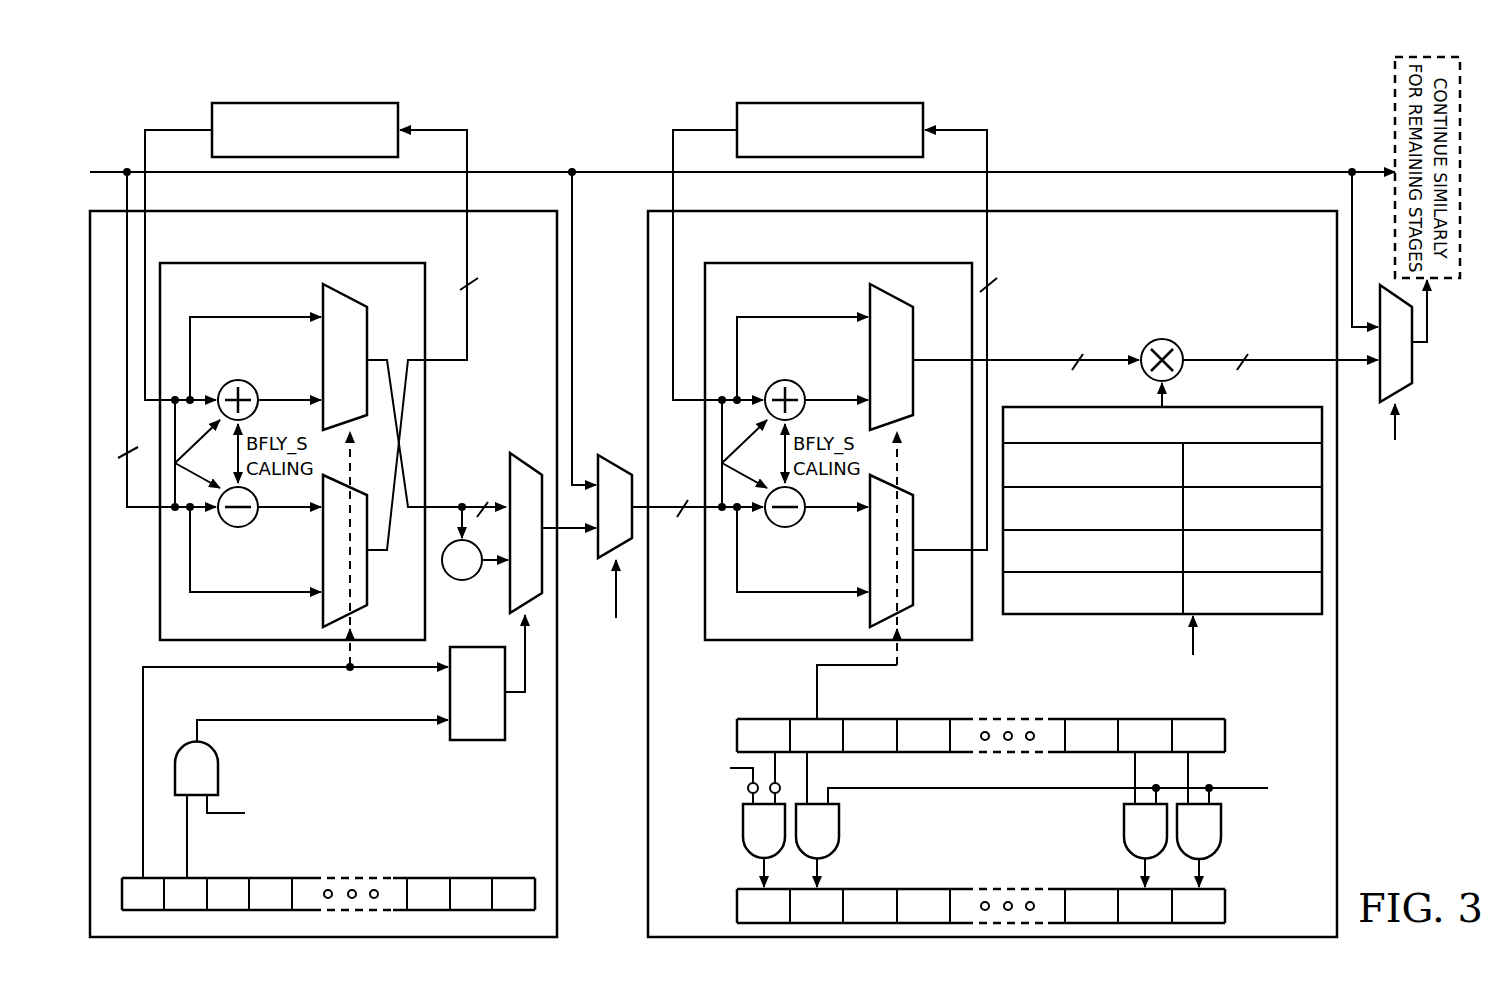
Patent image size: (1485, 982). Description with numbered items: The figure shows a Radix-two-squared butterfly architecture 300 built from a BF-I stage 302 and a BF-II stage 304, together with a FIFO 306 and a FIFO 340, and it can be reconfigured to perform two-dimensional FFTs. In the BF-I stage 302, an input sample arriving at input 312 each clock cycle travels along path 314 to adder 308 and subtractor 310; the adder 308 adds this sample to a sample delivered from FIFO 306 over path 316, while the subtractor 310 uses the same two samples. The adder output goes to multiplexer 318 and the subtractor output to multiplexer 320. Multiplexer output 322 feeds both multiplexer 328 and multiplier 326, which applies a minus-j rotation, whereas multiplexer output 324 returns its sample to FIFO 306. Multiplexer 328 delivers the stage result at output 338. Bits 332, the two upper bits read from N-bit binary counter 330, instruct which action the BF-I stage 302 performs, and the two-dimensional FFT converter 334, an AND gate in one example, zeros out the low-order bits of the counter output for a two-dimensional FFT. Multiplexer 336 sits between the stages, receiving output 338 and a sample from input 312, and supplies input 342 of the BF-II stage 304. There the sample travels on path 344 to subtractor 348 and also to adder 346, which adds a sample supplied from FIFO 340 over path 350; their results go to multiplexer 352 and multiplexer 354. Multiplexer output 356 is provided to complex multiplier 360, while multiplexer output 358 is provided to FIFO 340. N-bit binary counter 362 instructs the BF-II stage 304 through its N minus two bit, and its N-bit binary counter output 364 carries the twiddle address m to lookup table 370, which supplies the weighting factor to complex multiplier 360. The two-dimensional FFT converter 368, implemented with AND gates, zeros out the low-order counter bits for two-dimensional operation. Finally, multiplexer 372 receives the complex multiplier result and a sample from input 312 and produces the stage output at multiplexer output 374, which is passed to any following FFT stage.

The Radix-2^2 butterfly architecture 300 is at (1208, 103).
The BF-I stage 302 is at (323, 574).
The BF-II stage 304 is at (992, 574).
The FIFO 306 is at (305, 101).
The adder 308 is at (257, 383).
The subtractor 310 is at (257, 527).
The input 312 is at (105, 170).
The path 314 is at (143, 509).
The path 316 is at (147, 245).
The multiplexer 318 is at (322, 297).
The multiplexer 320 is at (322, 612).
The multiplexer output 322 is at (380, 357).
The multiplexer output 324 is at (382, 556).
The multiplier 326 is at (467, 578).
The multiplexer 328 is at (508, 475).
The N-bit binary counter 330 is at (477, 875).
The bits 332 is at (475, 745).
The 2D FFT converter 334 is at (220, 765).
The multiplexer 336 is at (606, 455).
The output 338 is at (577, 532).
The FIFO 340 is at (830, 101).
The input 342 is at (672, 518).
The path 344 is at (693, 500).
The adder 346 is at (805, 383).
The subtractor 348 is at (805, 527).
The path 350 is at (675, 245).
The multiplexer 352 is at (868, 297).
The multiplexer 354 is at (868, 612).
The multiplexer output 356 is at (930, 357).
The multiplexer output 358 is at (930, 556).
The complex multiplier 360 is at (1170, 339).
The N-bit binary counter 362 is at (766, 716).
The N-bit binary counter output 364 is at (1198, 646).
The 2D FFT converter 368 is at (1235, 795).
The lookup table 370 is at (1083, 617).
The multiplexer 372 is at (1405, 385).
The multiplexer output 374 is at (1413, 345).